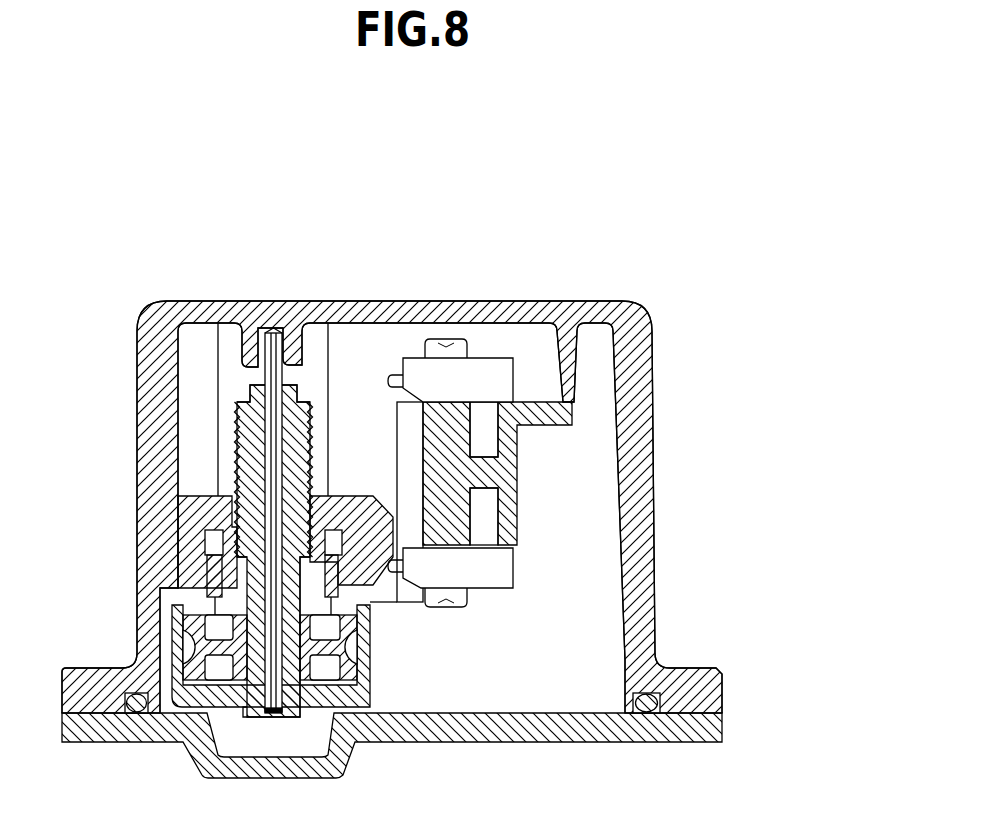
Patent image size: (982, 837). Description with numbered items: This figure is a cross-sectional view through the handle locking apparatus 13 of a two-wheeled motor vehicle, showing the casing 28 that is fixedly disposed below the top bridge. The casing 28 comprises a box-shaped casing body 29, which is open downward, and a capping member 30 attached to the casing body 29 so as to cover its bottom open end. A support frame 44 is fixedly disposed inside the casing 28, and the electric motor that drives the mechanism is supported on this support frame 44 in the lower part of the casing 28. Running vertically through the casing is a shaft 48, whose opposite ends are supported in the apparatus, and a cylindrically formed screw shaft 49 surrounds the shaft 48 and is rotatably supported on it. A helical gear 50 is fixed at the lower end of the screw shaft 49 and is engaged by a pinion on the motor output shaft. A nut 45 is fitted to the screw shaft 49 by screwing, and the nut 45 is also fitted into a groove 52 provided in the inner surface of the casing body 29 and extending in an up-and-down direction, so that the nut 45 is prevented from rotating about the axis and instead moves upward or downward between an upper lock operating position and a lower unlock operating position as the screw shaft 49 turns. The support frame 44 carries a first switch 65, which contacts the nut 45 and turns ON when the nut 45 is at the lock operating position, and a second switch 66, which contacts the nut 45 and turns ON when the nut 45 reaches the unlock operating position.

The handle locking apparatus 13 is at (653, 339).
The casing 28 is at (472, 675).
The casing body 29 is at (637, 612).
The capping member 30 is at (445, 723).
The support frame 44 is at (507, 487).
The nut 45 is at (195, 507).
The shaft 48 is at (271, 336).
The screw shaft 49 is at (250, 435).
The helical gear 50 is at (330, 628).
The groove 52 is at (323, 363).
The first switch 65 is at (485, 368).
The second switch 66 is at (487, 585).